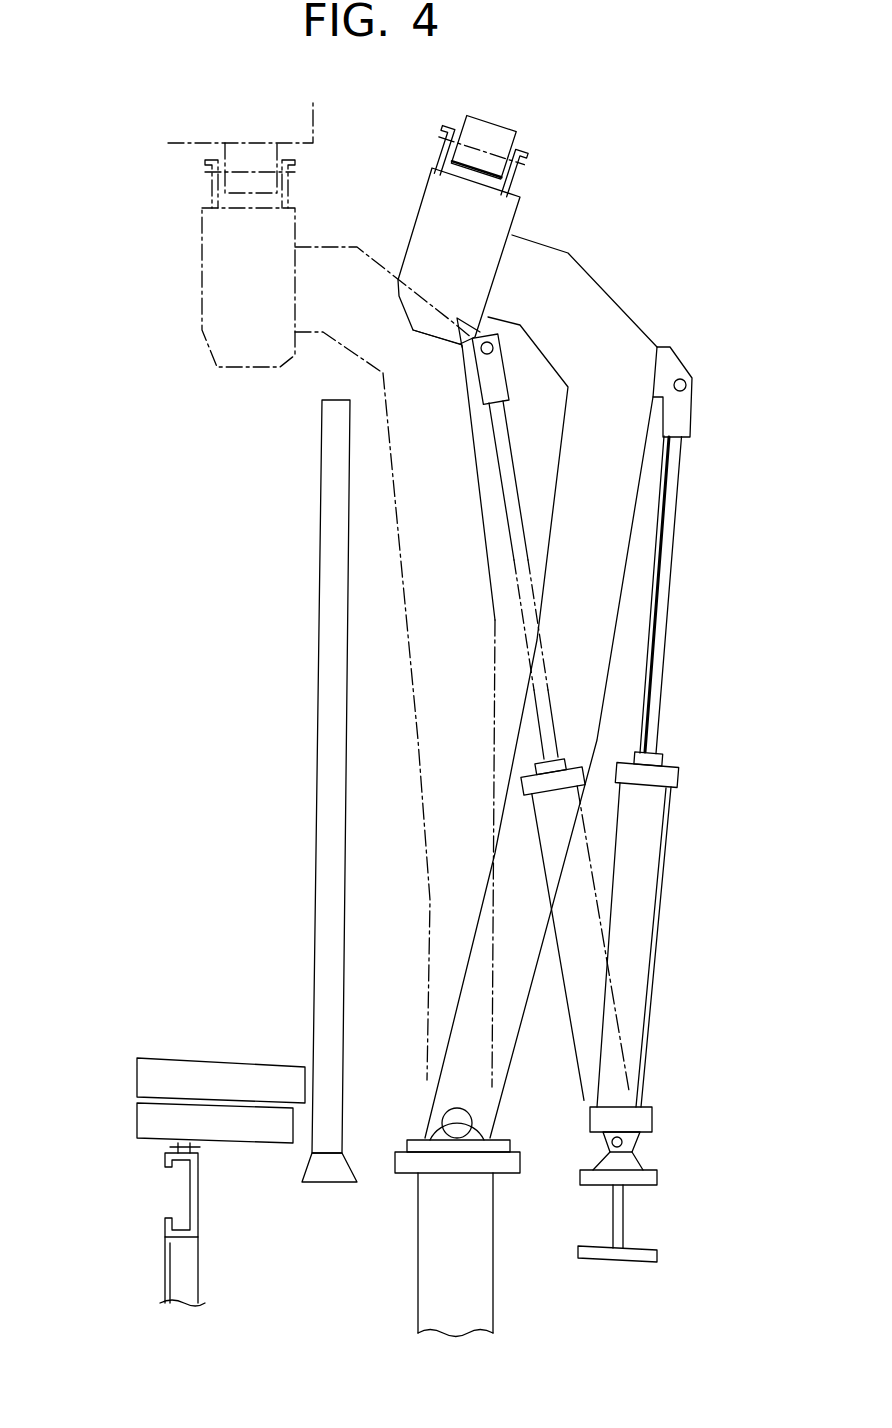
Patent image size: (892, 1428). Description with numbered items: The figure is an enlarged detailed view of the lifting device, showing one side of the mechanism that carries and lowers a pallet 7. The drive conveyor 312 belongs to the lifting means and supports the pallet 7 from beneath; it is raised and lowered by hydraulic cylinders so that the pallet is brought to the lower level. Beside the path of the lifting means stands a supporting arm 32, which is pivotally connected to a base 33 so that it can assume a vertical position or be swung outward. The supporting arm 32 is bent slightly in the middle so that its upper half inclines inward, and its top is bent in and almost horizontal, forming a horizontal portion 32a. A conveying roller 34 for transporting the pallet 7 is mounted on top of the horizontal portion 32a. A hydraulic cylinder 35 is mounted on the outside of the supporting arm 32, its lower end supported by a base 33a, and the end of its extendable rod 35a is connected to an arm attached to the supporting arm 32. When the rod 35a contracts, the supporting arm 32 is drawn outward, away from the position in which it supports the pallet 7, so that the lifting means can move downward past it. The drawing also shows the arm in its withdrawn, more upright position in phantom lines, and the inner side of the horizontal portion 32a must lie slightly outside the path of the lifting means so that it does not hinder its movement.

The pallet 7 is at (223, 1073).
The drive conveyor 312 is at (198, 1188).
The supporting arm 32 is at (557, 625).
The horizontal portion 32a is at (242, 350).
The base 33 is at (408, 1162).
The base 33a is at (630, 1163).
The conveying roller 34 is at (518, 155).
The hydraulic cylinder 35 is at (655, 917).
The extendable rod 35a is at (666, 628).